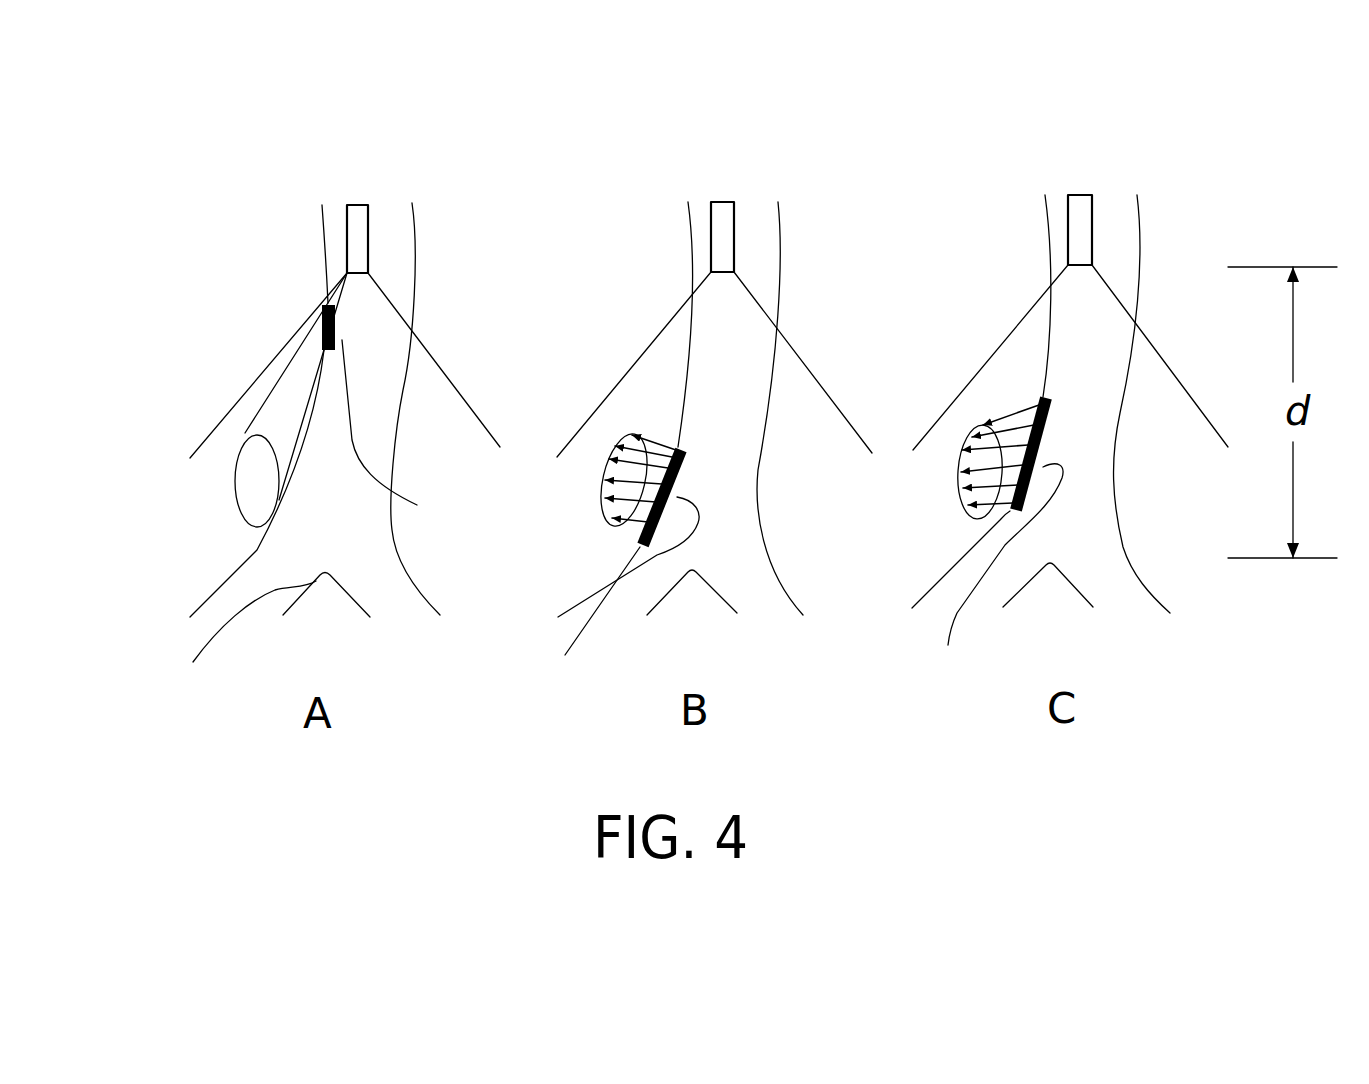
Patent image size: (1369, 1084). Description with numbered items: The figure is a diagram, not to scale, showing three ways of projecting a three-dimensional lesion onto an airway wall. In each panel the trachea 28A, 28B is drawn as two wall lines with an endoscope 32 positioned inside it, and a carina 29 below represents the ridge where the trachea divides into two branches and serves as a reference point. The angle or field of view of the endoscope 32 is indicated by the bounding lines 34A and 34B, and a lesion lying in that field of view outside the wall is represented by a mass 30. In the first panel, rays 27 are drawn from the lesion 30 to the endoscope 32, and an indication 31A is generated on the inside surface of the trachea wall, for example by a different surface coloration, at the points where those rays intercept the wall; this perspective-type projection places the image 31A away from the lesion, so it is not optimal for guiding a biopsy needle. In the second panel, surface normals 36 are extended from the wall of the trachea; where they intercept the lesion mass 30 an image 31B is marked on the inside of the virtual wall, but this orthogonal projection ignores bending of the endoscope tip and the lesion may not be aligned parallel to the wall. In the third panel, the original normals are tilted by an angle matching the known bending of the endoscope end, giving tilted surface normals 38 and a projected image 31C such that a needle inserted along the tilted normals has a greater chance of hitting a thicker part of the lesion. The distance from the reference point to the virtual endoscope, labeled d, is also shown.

The rays 27 is at (312, 390).
The trachea 28A is at (320, 229).
The trachea 28B is at (408, 263).
The carina 29 is at (254, 642).
The mass 30 is at (237, 503).
The indication 31A is at (422, 432).
The image 31B is at (570, 627).
The projected image 31C is at (979, 580).
The endoscope 32 is at (363, 220).
The bounding line 34A is at (220, 412).
The bounding line 34B is at (470, 410).
The surface normals 36 is at (598, 513).
The tilted surface normals 38 is at (943, 522).